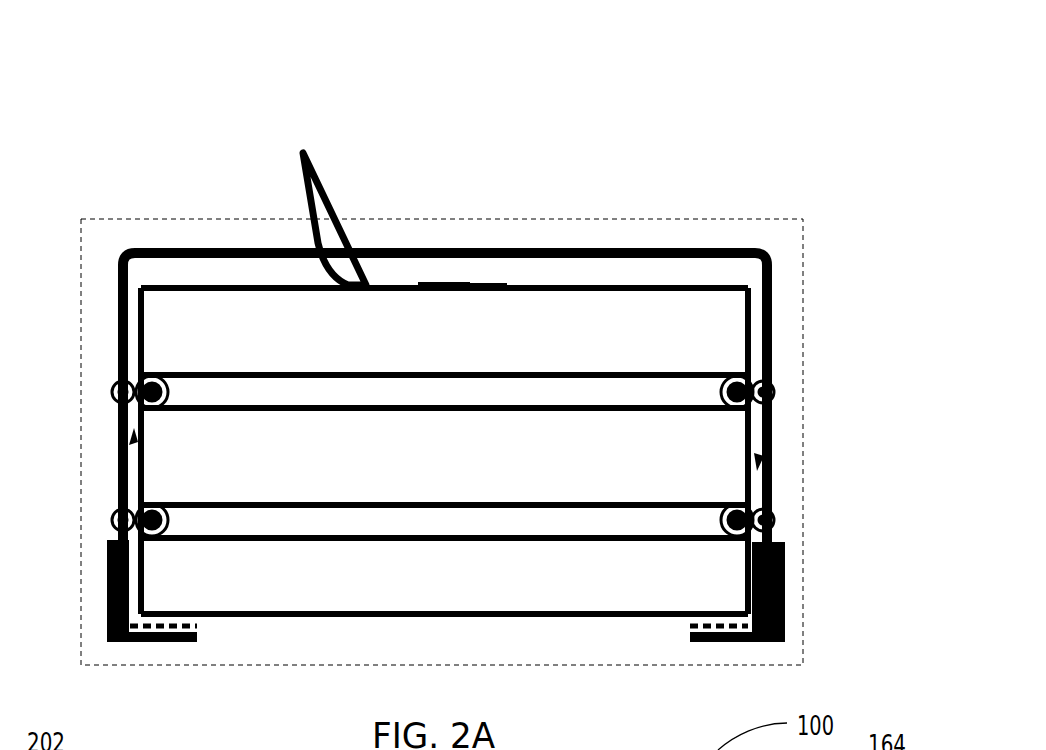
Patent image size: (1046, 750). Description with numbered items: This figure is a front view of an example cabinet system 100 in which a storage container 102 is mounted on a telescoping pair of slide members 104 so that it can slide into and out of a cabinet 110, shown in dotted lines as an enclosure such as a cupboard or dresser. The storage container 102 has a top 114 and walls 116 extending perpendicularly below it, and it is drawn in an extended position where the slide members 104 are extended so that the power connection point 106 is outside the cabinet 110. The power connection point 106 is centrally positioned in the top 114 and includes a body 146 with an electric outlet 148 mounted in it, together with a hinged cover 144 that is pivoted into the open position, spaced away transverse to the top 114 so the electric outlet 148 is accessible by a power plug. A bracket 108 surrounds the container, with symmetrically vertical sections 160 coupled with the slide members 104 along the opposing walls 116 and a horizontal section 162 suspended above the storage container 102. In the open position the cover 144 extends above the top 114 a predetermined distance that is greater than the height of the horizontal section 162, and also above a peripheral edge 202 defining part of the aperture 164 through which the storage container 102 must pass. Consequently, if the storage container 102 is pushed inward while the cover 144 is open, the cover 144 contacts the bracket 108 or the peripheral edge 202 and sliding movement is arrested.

The cabinet system 100 is at (705, 65).
The storage container 102 is at (340, 570).
The slide members 104 is at (785, 582).
The power connection point 106 is at (445, 195).
The bracket 108 is at (105, 288).
The cabinet 110 is at (803, 313).
The top 114 is at (622, 278).
The walls 116 is at (123, 442).
The cover 144 is at (305, 150).
The body 146 is at (487, 283).
The electric outlet 148 is at (435, 278).
The vertical sections 160 is at (118, 348).
The horizontal section 162 is at (717, 242).
The aperture 164 is at (788, 243).
The peripheral edge 202 is at (176, 219).